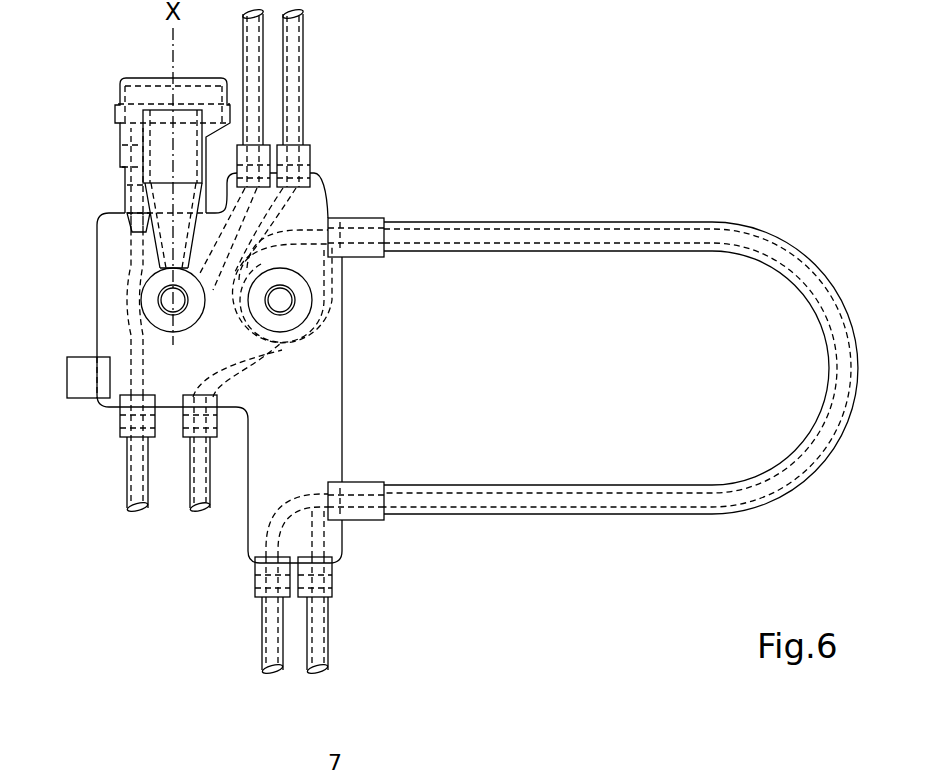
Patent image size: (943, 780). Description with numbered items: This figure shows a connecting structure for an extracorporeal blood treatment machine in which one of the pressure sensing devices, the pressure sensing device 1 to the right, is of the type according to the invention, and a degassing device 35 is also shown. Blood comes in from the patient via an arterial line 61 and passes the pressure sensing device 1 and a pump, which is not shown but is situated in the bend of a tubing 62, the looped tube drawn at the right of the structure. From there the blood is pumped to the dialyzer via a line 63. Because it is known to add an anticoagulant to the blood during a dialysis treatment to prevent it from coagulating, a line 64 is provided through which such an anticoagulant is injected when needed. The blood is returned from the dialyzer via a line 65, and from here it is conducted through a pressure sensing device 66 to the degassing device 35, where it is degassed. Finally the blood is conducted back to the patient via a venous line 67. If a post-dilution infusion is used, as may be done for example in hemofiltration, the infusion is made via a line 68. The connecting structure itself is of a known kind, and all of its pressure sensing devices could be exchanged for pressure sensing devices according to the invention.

The pressure sensing device 1 is at (300, 305).
The degassing device 35 is at (158, 145).
The arterial line 61 is at (197, 490).
The tubing 62 is at (840, 364).
The line 63 is at (268, 645).
The line 64 is at (320, 643).
The line 65 is at (255, 65).
The pressure sensing device 66 is at (150, 300).
The venous line 67 is at (135, 482).
The line 68 is at (295, 70).